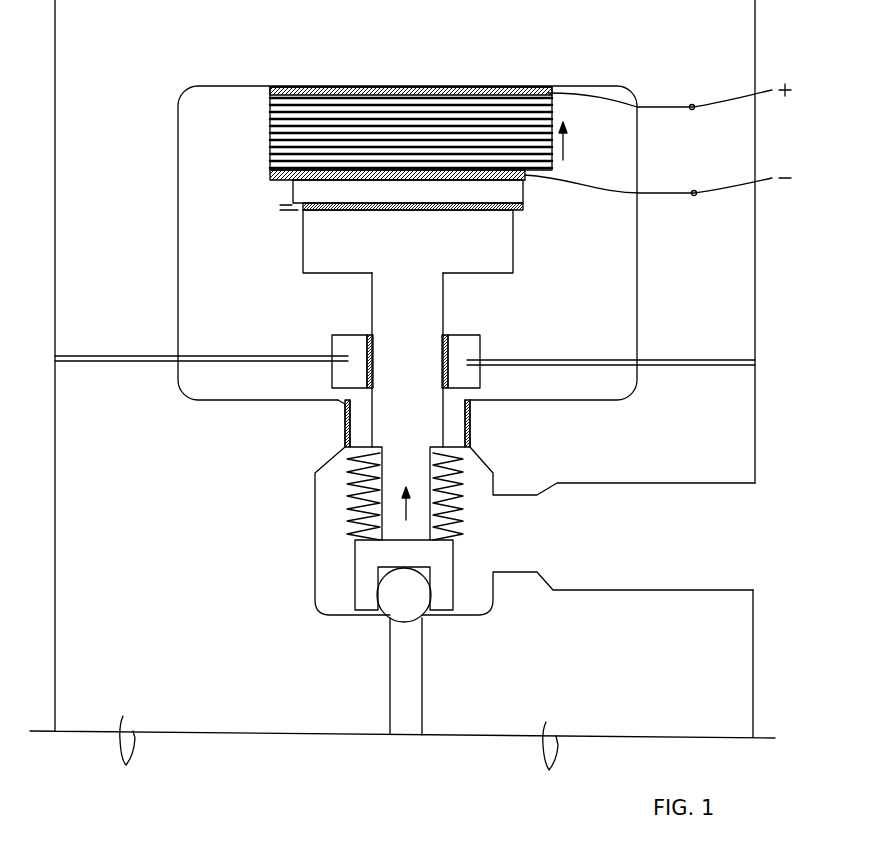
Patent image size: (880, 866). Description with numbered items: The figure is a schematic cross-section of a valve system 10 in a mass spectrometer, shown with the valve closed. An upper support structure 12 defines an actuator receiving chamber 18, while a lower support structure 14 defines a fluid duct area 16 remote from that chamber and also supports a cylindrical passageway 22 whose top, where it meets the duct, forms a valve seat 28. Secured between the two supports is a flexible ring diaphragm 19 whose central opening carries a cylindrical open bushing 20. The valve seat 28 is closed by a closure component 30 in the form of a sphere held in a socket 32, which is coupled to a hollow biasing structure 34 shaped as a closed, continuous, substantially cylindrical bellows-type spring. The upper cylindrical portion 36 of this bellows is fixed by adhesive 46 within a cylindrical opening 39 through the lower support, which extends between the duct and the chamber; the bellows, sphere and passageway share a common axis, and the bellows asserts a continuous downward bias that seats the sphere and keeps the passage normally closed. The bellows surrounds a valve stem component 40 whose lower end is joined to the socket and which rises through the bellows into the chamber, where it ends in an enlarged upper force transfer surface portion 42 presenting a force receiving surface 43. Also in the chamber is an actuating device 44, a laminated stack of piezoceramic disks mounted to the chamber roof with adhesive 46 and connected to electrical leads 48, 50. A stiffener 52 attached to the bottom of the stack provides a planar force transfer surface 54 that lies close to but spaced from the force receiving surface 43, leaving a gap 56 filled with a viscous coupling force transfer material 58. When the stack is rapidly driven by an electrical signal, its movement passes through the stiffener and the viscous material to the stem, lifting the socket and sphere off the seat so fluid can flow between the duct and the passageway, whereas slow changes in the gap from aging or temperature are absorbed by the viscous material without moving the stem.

The system of interest 10 is at (190, 492).
The upper support structure 12 is at (125, 305).
The lower support structure 14 is at (157, 593).
The fluid duct area 16 is at (670, 551).
The actuator receiving chamber 18 is at (637, 314).
The flexible ring diaphragm 19 is at (120, 356).
The cylindrical open bushing 20 is at (332, 343).
The cylindrical passageway 22 is at (410, 688).
The valve seat 28 is at (408, 622).
The closure component 30 is at (410, 595).
The socket 32 is at (450, 558).
The biasing structure 34 is at (460, 502).
The upper cylindrical portion 36 is at (470, 440).
The cylindrical opening 39 is at (470, 418).
The valve stem component 40 is at (395, 415).
The enlarged upper force transfer surface portion 42 is at (500, 260).
The force receiving surface 43 is at (470, 205).
The actuating device 44 is at (285, 118).
The adhesive 46 is at (270, 92).
The electrical lead 48 is at (692, 107).
The electrical lead 50 is at (694, 193).
The stiffener 52 is at (295, 195).
The planar force transfer surface 54 is at (483, 218).
The gap 56 is at (287, 212).
The viscous coupling force transfer material 58 is at (400, 212).